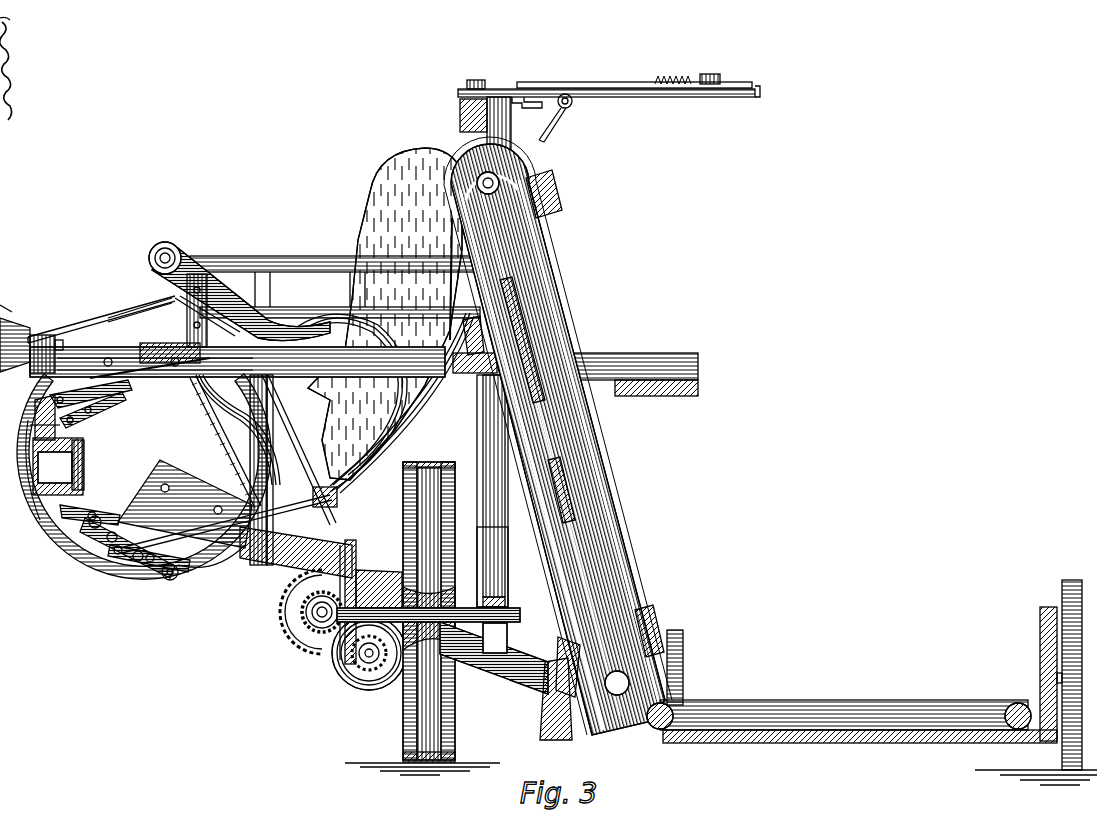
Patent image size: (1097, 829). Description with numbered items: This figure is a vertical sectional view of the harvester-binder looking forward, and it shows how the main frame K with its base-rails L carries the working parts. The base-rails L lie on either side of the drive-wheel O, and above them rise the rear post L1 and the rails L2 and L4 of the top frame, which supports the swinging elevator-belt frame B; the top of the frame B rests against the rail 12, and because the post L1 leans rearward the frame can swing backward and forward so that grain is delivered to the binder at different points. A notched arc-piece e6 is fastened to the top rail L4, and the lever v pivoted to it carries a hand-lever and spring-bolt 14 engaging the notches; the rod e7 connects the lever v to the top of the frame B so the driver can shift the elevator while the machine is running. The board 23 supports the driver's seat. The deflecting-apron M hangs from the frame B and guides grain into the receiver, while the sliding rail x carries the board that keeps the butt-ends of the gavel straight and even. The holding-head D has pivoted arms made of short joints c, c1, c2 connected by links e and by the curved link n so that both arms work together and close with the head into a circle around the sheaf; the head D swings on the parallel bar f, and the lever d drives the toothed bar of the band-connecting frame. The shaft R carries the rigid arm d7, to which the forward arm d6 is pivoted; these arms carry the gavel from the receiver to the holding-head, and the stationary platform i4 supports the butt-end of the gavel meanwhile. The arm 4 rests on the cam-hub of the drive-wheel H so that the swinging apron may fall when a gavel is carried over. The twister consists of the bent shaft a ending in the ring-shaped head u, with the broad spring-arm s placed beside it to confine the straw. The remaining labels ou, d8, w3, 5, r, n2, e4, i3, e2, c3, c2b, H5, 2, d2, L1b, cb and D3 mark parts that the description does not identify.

The lever v is at (609, 78).
The hand-lever and spring-bolt 14 is at (708, 86).
The notched arc-piece e6 is at (467, 88).
The top rail L4 is at (460, 118).
The rod e7 is at (556, 118).
The board 23 is at (634, 375).
The main frame K is at (385, 314).
The deflecting-apron M is at (442, 279).
The strap ou is at (380, 410).
The curved link n is at (430, 392).
The top frame rail L2 is at (282, 258).
The ring-shaped head u is at (237, 362).
The short joint or arm c2 is at (153, 357).
The short joint or arm c1 is at (150, 372).
The shaft R is at (150, 260).
The short rigid arm d7 is at (140, 304).
The rod d8 is at (207, 315).
The broad spring-arm s is at (101, 319).
The fitting w3 is at (15, 336).
The block 5 is at (46, 354).
The holding-head D is at (135, 476).
The rim r is at (21, 470).
The parallel bar f is at (80, 466).
The plate n2 is at (85, 464).
The lever d is at (83, 410).
The pin e4 is at (36, 427).
The short joint or arm c is at (93, 410).
The link e is at (90, 506).
The pivot i3 is at (102, 513).
The lever e2 is at (127, 549).
The link c3 is at (149, 556).
The link c2b is at (211, 564).
The stationary platform i4 is at (185, 504).
The strut H5 is at (225, 442).
The forward arm d6 is at (238, 470).
The rod 2 is at (226, 523).
The drive-wheel H is at (296, 476).
The arm 4 is at (298, 640).
The pulley d2 is at (369, 668).
The drive-wheel O is at (422, 618).
The main base-rail L is at (358, 580).
The rear post L1 is at (494, 658).
The link L1b is at (492, 491).
The rail 12 is at (475, 363).
The sliding rail x is at (473, 335).
The elevator-belt frame B is at (558, 436).
The block cb is at (620, 636).
The bracket D3 is at (560, 688).
The bent shaft a is at (872, 682).